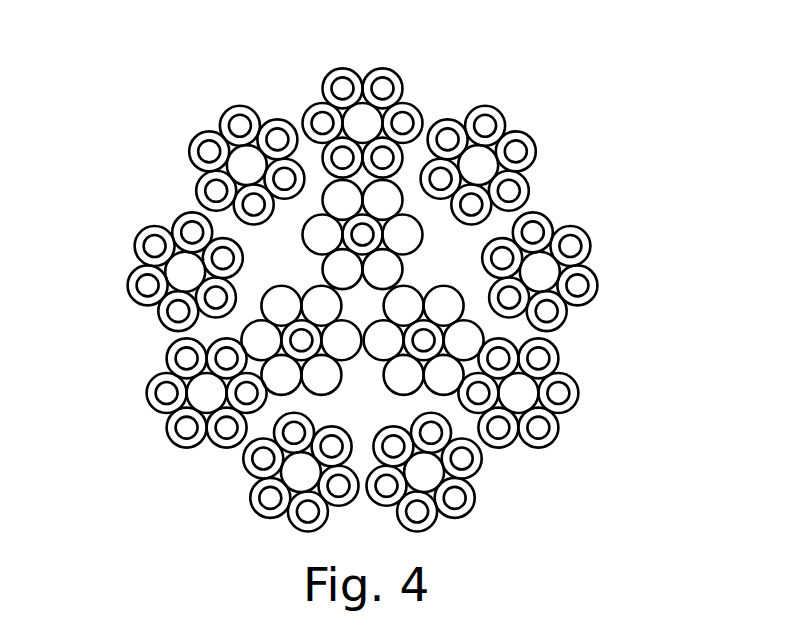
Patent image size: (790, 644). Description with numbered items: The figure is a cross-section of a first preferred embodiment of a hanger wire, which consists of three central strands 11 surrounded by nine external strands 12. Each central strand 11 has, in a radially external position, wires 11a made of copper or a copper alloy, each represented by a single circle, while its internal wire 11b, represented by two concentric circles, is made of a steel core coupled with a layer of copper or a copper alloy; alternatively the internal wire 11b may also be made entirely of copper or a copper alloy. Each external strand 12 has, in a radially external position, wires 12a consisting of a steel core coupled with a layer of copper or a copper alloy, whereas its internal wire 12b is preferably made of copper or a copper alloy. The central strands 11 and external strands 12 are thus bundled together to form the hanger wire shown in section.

The central strand 11 is at (260, 340).
The wire of central strand 11a is at (283, 393).
The internal wire of central strand 11b is at (303, 335).
The external strand 12 is at (555, 127).
The wire of external strand 12a is at (485, 104).
The internal wire of external strand 12b is at (482, 167).